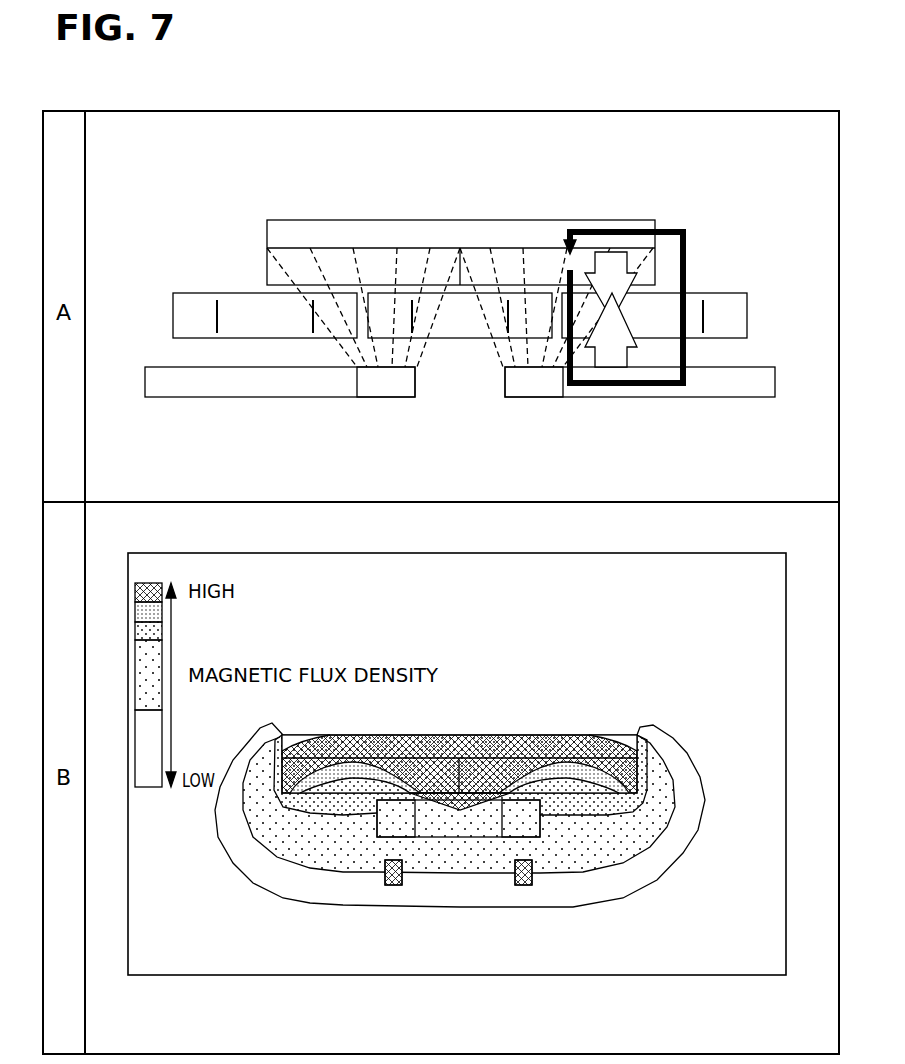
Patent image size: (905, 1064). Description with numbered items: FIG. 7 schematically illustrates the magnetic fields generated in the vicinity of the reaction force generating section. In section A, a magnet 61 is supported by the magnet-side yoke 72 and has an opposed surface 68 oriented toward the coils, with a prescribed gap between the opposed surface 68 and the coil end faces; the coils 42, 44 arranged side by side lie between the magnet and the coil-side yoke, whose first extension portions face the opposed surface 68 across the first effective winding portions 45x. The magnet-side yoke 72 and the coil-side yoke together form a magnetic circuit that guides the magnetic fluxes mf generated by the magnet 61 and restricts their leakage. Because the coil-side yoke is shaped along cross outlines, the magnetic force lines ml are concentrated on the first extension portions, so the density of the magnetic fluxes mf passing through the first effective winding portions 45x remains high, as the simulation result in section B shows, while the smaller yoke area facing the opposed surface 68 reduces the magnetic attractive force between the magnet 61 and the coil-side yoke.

The magnet-side yoke 72 is at (293, 220).
The magnet 61 is at (541, 248).
The coil 42 is at (173, 313).
The coil 44 is at (747, 315).
The opposed surface 68 is at (284, 286).
The first effective winding portion 45x is at (380, 837).
The magnetic force lines ml is at (275, 264).
The magnetic fluxes mf is at (672, 229).